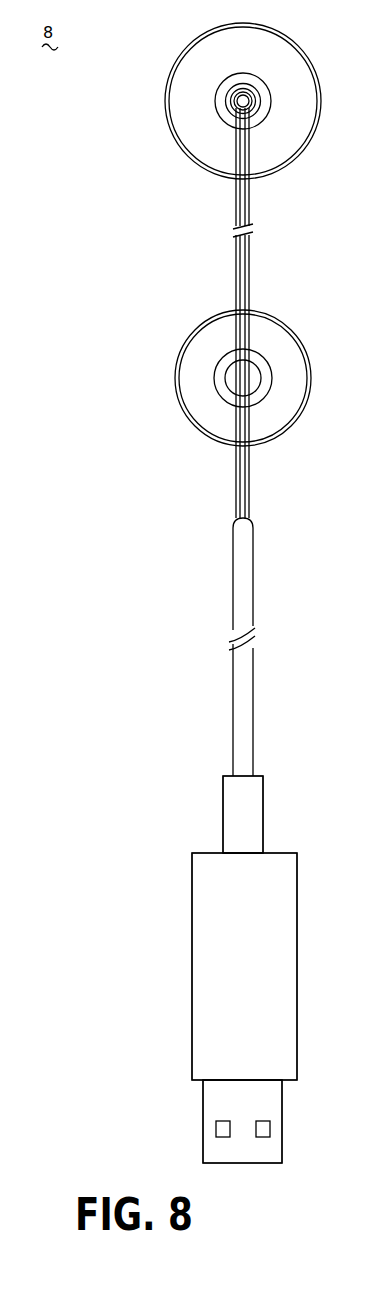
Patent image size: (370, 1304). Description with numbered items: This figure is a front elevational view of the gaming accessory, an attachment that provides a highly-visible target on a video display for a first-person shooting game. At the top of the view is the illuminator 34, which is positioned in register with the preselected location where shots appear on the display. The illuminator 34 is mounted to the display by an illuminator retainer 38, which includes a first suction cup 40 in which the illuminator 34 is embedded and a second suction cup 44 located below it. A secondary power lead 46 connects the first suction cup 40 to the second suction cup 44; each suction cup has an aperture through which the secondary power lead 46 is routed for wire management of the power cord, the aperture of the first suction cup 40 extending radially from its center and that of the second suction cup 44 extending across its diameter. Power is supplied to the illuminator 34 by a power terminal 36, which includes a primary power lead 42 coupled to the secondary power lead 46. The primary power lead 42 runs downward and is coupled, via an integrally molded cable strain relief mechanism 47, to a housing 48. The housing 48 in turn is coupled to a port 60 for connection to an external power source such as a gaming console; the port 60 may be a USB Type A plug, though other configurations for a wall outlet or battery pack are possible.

The illuminator 34 is at (137, 86).
The first suction cup 40 is at (190, 68).
The illuminator retainer 38 is at (291, 256).
The secondary power lead 46 is at (238, 202).
The second suction cup 44 is at (203, 340).
The primary power lead 42 is at (237, 573).
The power terminal 36 is at (292, 752).
The cable strain relief mechanism 47 is at (230, 806).
The housing 48 is at (210, 932).
The port 60 is at (212, 1116).